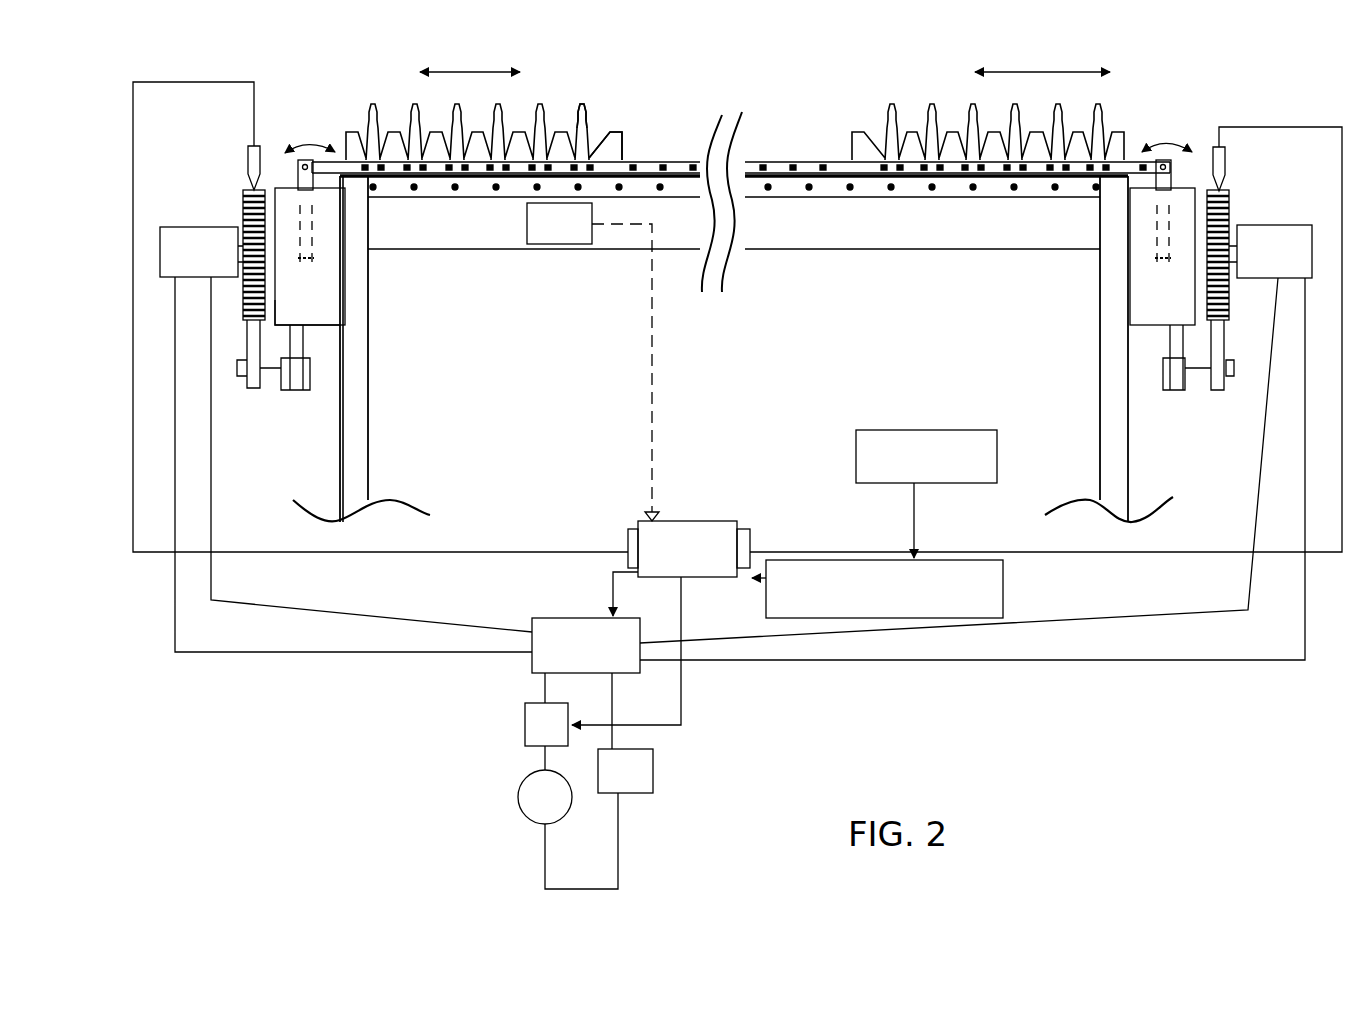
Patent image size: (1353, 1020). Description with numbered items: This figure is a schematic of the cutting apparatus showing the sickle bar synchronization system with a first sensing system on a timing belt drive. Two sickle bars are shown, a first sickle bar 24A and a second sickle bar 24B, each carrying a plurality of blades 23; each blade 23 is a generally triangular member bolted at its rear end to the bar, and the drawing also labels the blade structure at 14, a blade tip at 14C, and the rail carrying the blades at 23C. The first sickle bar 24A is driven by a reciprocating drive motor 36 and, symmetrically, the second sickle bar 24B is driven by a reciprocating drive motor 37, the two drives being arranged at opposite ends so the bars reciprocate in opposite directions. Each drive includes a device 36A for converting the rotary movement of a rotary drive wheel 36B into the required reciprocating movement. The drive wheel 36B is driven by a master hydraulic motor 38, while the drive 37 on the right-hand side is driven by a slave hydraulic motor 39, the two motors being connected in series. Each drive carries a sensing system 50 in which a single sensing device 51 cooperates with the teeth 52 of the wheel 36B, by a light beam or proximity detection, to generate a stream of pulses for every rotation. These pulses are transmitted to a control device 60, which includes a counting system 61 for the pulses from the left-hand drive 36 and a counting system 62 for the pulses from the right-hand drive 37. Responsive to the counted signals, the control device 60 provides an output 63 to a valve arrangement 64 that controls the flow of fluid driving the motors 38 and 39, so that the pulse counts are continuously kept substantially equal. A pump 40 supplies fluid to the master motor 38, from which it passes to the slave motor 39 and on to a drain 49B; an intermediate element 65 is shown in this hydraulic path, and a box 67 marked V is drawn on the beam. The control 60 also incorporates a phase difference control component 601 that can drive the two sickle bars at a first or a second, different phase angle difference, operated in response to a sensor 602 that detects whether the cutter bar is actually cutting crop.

The blade 14 is at (588, 132).
The blade tip 14C is at (586, 103).
The blades 23 is at (608, 150).
The rail 23C is at (618, 162).
The first sickle bar 24A is at (390, 135).
The second sickle bar 24B is at (1002, 176).
The reciprocating drive motor 36 is at (277, 125).
The converting device 36A is at (330, 290).
The rotary drive wheel 36B is at (265, 288).
The reciprocating drive motor 37 is at (1187, 132).
The master hydraulic motor 38 is at (215, 236).
The slave hydraulic motor 39 is at (1280, 242).
The pump 40 is at (537, 797).
The drain 49B is at (635, 784).
The sensing system 50 is at (240, 128).
The sensing device 51 is at (243, 176).
The teeth 52 is at (245, 195).
The control device 60 is at (700, 520).
The counting system 61 is at (633, 535).
The counting system 62 is at (748, 522).
The output 63 is at (613, 590).
The valve arrangement 64 is at (540, 615).
The flow regulator 65 is at (524, 720).
The velocity sensor 67 is at (557, 244).
The phase difference control component 601 is at (952, 612).
The sensor 602 is at (922, 432).